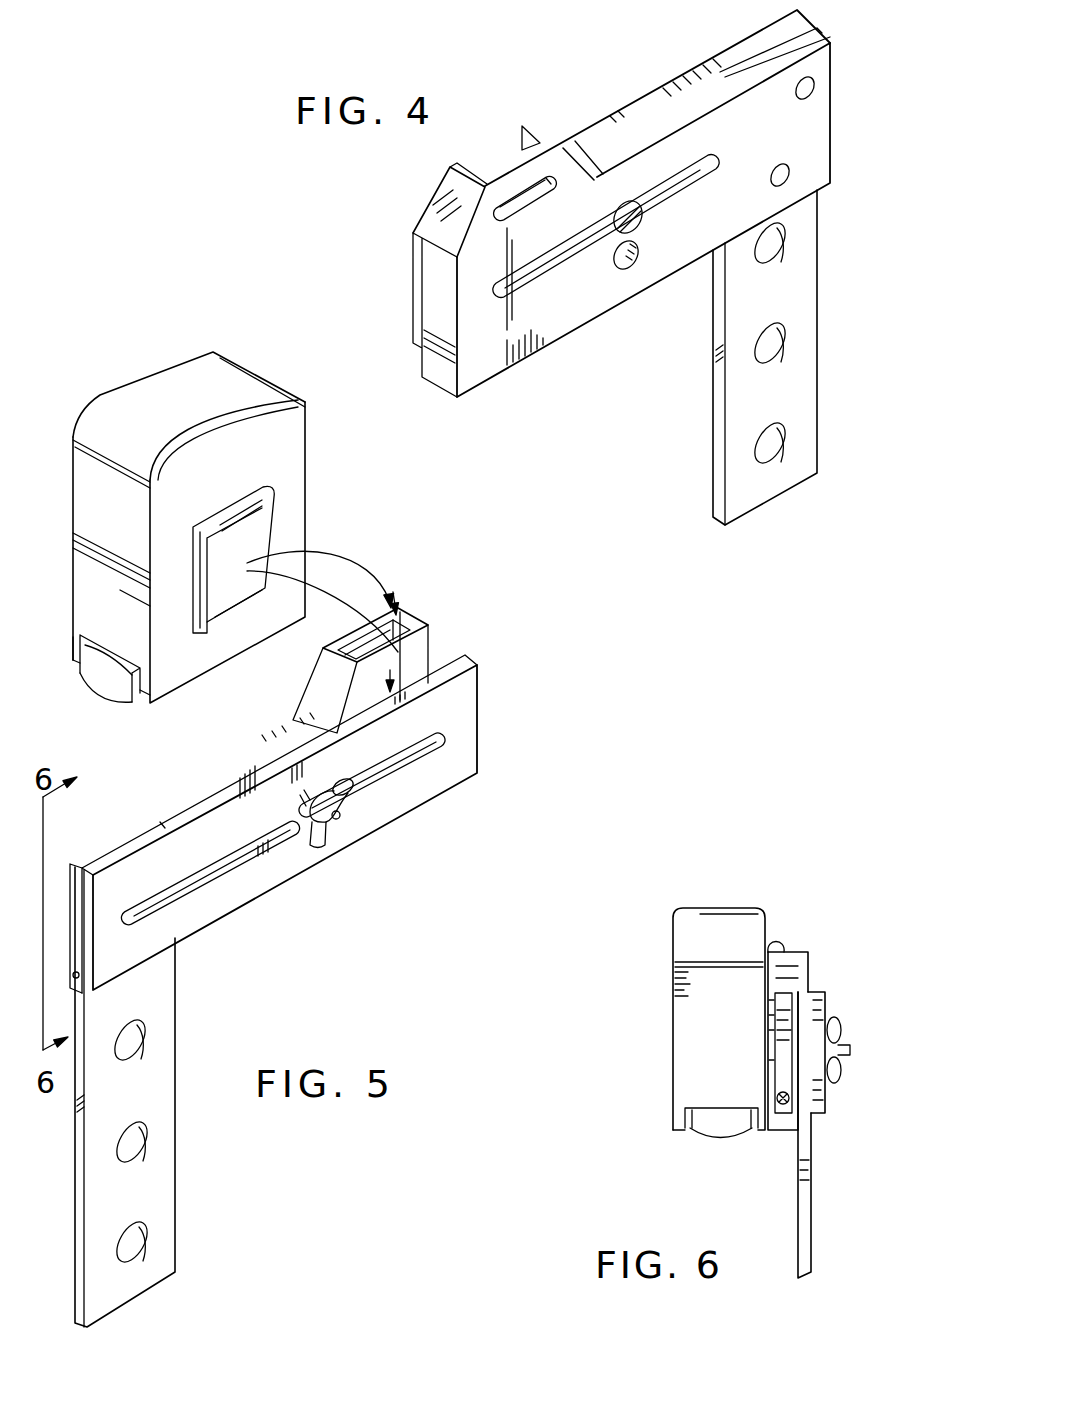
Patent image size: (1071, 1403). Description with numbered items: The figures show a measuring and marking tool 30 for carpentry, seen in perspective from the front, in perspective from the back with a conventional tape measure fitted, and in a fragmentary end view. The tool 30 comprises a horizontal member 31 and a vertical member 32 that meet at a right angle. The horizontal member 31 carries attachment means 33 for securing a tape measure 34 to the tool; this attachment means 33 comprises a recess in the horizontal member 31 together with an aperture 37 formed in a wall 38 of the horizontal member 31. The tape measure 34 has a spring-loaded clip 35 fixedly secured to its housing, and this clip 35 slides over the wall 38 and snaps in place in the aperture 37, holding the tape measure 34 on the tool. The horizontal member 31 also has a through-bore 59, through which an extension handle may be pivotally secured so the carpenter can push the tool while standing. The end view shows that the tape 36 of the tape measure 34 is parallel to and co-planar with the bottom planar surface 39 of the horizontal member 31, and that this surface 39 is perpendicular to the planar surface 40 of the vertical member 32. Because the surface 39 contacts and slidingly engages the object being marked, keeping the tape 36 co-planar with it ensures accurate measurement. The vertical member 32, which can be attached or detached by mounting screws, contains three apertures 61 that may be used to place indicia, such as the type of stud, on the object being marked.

In FIG. 4, the measuring and marking tool 30 is at (606, 364).
In FIG. 4, the horizontal member 31 is at (808, 65).
In FIG. 6, the horizontal member 31 is at (794, 960).
In FIG. 4, the vertical member 32 is at (799, 232).
In FIG. 6, the vertical member 32 is at (798, 1228).
In FIG. 4, the attachment means 33 is at (547, 145).
In FIG. 5, the attachment means 33 is at (434, 612).
In FIG. 5, the tape measure 34 is at (157, 390).
In FIG. 5, the clip 35 is at (260, 541).
In FIG. 5, the tape 36 is at (110, 675).
In FIG. 6, the tape 36 is at (706, 1126).
In FIG. 4, the aperture 37 is at (478, 228).
In FIG. 5, the aperture 37 is at (400, 655).
In FIG. 4, the wall 38 is at (585, 175).
In FIG. 6, the bottom planar surface 39 is at (782, 1132).
In FIG. 6, the planar surface 40 is at (798, 1196).
In FIG. 4, the through-bore 59 is at (630, 268).
In FIG. 4, the apertures 61 is at (783, 343).
In FIG. 5, the apertures 61 is at (150, 1027).